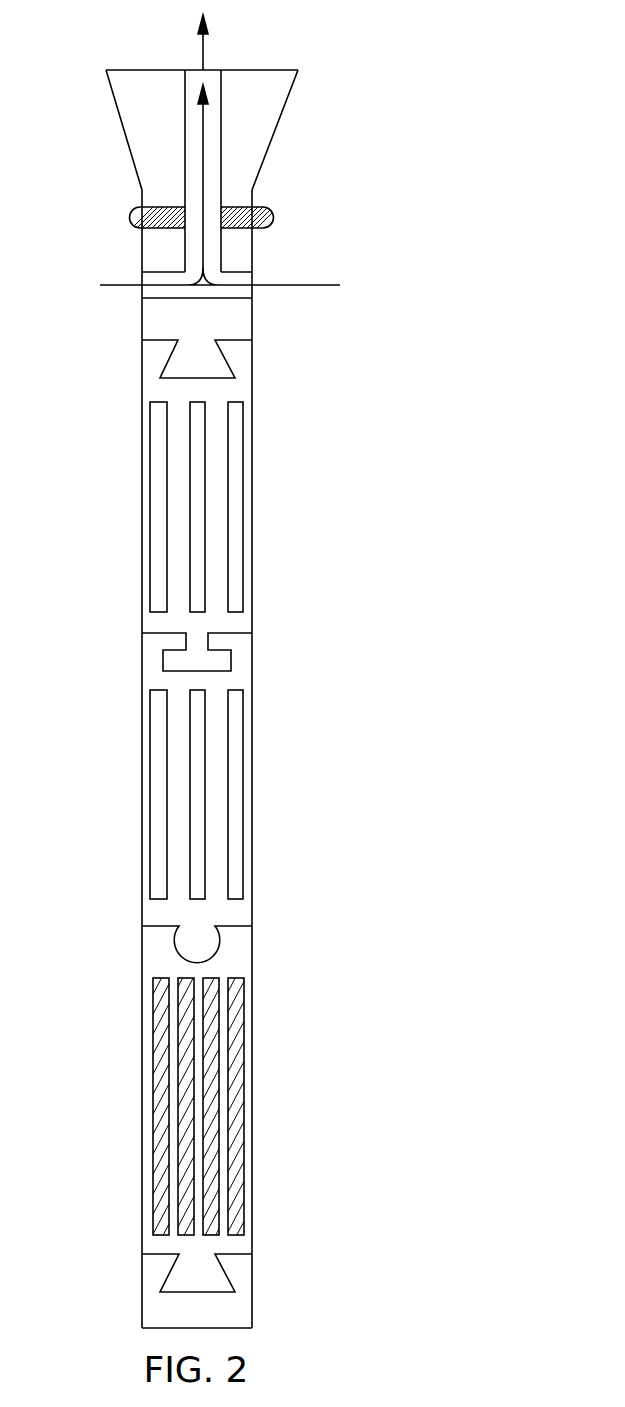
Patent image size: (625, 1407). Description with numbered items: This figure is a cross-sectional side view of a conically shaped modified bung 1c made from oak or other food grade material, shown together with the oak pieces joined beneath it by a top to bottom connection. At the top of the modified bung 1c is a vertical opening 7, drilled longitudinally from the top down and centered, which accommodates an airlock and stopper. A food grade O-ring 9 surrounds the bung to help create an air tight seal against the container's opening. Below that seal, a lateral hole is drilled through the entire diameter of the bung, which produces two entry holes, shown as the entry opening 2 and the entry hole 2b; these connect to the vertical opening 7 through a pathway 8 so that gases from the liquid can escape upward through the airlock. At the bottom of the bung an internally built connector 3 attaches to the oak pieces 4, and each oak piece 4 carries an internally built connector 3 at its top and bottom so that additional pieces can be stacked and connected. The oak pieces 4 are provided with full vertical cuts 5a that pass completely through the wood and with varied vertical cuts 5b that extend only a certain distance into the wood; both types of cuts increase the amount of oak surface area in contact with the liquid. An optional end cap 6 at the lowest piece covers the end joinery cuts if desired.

The conically shaped modified bung 1c is at (278, 130).
The entry opening 2 is at (252, 273).
The entire diameter entry hole 2b is at (142, 272).
The internally built connector 3 is at (202, 352).
The oak pieces 4 is at (142, 458).
The full vertical cuts 5a is at (244, 472).
The varied vertical cuts 5b is at (244, 1085).
The end cap 6 is at (252, 1300).
The vertical opening 7 is at (215, 68).
The pathway 8 is at (200, 38).
The food grade O-ring 9 is at (275, 218).